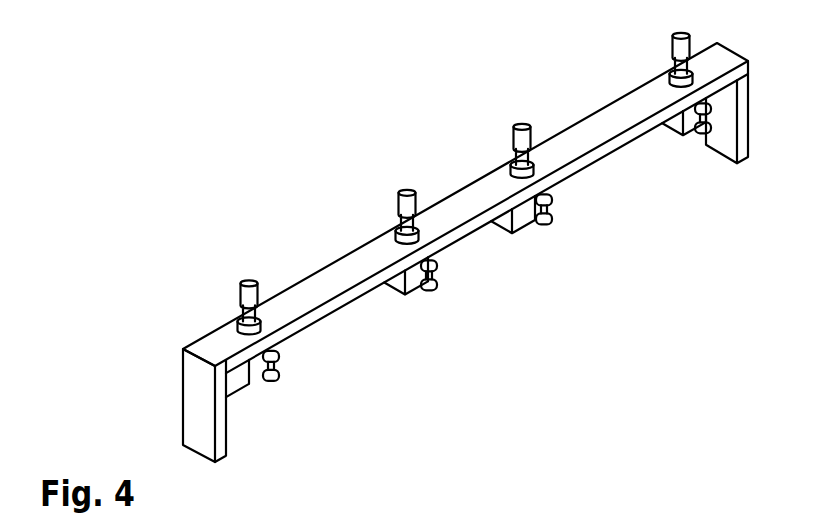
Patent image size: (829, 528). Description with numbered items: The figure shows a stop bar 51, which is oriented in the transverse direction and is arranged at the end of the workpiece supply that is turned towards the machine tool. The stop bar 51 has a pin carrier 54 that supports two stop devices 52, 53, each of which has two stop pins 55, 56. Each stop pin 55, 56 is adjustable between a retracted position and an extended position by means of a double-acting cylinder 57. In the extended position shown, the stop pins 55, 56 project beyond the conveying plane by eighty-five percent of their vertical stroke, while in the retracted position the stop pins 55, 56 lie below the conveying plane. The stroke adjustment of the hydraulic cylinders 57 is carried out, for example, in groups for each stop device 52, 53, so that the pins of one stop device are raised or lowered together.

The stop bar 51 is at (336, 313).
The stop device 52 is at (263, 283).
The stop device 53 is at (511, 129).
The pin carrier 54 is at (498, 214).
The stop pin 55 is at (249, 296).
The stop pin 56 is at (693, 106).
The double-acting cylinder 57 is at (413, 279).